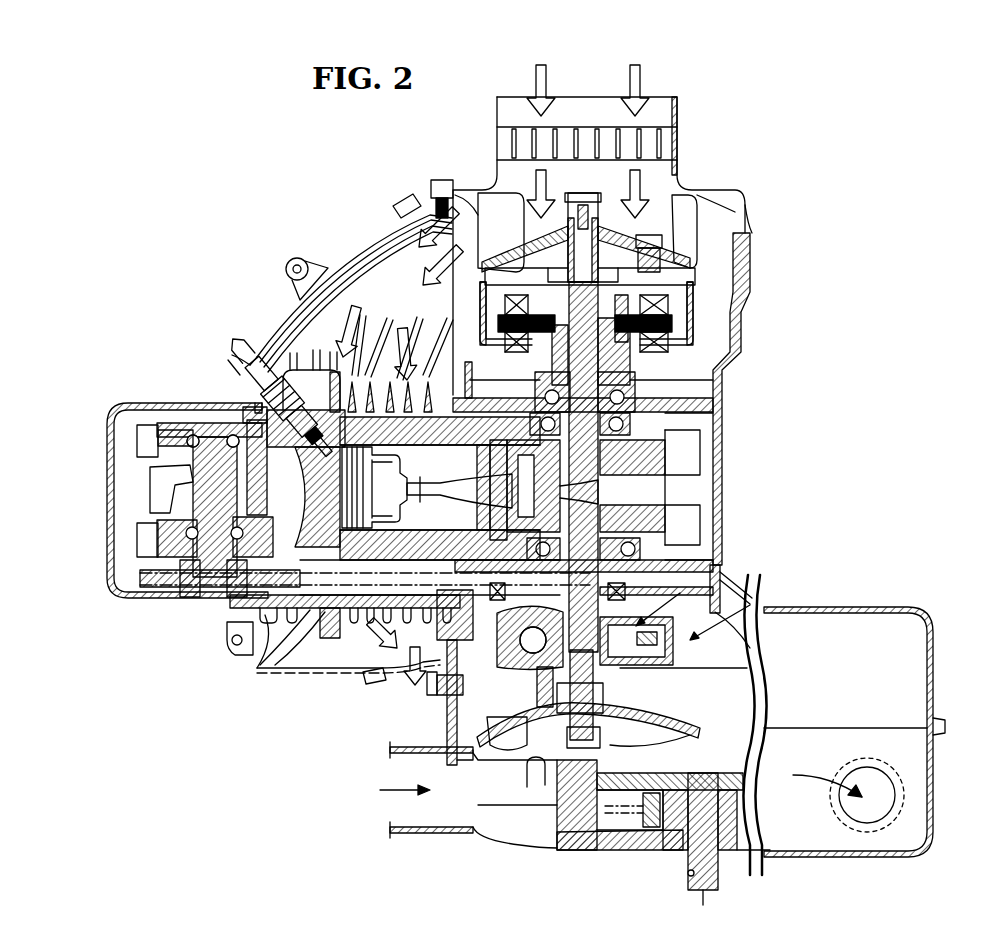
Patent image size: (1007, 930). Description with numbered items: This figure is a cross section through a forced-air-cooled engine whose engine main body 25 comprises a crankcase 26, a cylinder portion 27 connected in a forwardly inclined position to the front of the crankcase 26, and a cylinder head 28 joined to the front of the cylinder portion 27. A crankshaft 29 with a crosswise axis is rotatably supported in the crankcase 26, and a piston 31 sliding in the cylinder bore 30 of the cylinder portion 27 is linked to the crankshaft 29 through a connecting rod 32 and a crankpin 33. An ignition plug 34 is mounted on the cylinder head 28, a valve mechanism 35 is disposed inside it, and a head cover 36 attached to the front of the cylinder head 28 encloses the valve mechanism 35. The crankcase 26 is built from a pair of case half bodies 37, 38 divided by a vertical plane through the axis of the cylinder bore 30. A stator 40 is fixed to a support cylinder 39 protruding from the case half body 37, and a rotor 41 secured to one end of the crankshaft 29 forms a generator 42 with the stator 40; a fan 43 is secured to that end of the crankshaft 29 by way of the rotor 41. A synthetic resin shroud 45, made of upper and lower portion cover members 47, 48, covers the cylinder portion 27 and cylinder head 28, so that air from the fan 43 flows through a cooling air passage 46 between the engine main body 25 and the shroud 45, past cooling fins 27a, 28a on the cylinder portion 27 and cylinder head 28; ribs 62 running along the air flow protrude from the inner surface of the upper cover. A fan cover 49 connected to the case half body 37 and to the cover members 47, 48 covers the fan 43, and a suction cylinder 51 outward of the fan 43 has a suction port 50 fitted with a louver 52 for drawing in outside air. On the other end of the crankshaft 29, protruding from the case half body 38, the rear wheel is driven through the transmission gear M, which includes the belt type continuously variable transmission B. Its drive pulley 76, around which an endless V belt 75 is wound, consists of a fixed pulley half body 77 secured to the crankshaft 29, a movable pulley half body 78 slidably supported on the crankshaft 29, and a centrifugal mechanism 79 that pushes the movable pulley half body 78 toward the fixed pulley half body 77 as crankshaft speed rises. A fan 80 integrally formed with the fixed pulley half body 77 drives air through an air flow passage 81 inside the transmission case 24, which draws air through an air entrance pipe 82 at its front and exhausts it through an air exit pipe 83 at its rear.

The transmission case 24 is at (625, 842).
The engine main body 25 is at (290, 625).
The crankcase 26 is at (783, 430).
The cylinder portion 27 is at (380, 375).
The cooling fins 27a is at (340, 350).
The cylinder head 28 is at (220, 400).
The cooling fins 28a is at (258, 650).
The crankshaft 29 is at (655, 385).
The cylinder bore 30 is at (478, 440).
The piston 31 is at (375, 520).
The connecting rod 32 is at (412, 618).
The crankpin 33 is at (598, 490).
The ignition plug 34 is at (290, 300).
The valve mechanism 35 is at (128, 555).
The head cover 36 is at (105, 445).
The case half body 37 is at (720, 442).
The case half body 38 is at (720, 510).
The support cylinder 39 is at (660, 352).
The stator 40 is at (510, 300).
The rotor 41 is at (705, 250).
The generator 42 is at (710, 270).
The fan 43 is at (682, 205).
The shroud 45 is at (360, 235).
The cooling air passage 46 is at (395, 240).
The upper portion cover member 47 is at (262, 352).
The lower portion cover member 48 is at (332, 662).
The fan cover 49 is at (740, 215).
The suction port 50 is at (577, 115).
The suction cylinder 51 is at (680, 130).
The louver 52 is at (618, 140).
The ribs 62 is at (436, 215).
The endless V belt 75 is at (760, 668).
The drive pulley 76 is at (765, 585).
The fixed pulley half body 77 is at (445, 722).
The movable pulley half body 78 is at (612, 668).
The centrifugal mechanism 79 is at (718, 565).
The fan 80 is at (698, 735).
The air flow passage 81 is at (716, 750).
The air entrance pipe 82 is at (432, 835).
The air exit pipe 83 is at (905, 787).
The belt type continuously variable transmission B is at (540, 790).
The transmission gear M is at (675, 862).